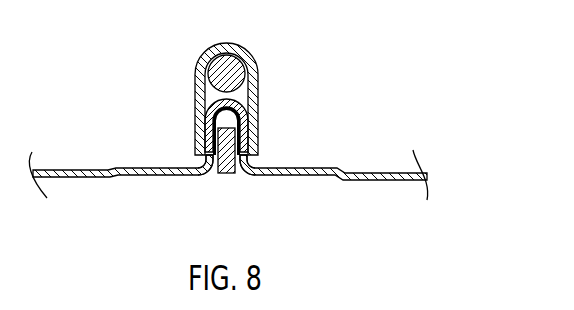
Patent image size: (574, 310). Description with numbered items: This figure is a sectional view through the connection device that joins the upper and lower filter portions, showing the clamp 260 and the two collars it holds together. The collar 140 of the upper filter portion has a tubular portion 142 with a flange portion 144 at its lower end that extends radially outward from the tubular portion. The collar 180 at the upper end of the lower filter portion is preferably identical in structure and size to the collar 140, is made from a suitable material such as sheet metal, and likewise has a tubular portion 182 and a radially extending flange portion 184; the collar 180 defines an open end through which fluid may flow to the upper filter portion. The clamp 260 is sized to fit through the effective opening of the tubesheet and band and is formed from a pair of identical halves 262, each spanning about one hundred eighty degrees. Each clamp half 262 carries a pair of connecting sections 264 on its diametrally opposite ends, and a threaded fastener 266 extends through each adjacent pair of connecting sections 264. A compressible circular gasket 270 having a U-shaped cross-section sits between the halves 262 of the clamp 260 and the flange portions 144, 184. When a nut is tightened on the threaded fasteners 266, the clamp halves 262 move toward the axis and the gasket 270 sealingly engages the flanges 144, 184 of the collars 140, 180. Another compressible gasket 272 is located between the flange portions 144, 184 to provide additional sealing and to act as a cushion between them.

The collar 140 is at (116, 174).
The tubular portion 142 is at (70, 183).
The flange portion 144 is at (198, 163).
The collar 180 is at (340, 172).
The tubular portion 182 is at (387, 178).
The flange portion 184 is at (257, 163).
The clamp 260 is at (259, 122).
The clamp half 262 is at (257, 98).
The connecting section 264 is at (201, 57).
The threaded fastener 266 is at (228, 68).
The compressible circular gasket 270 is at (213, 128).
The compressible gasket 272 is at (231, 174).